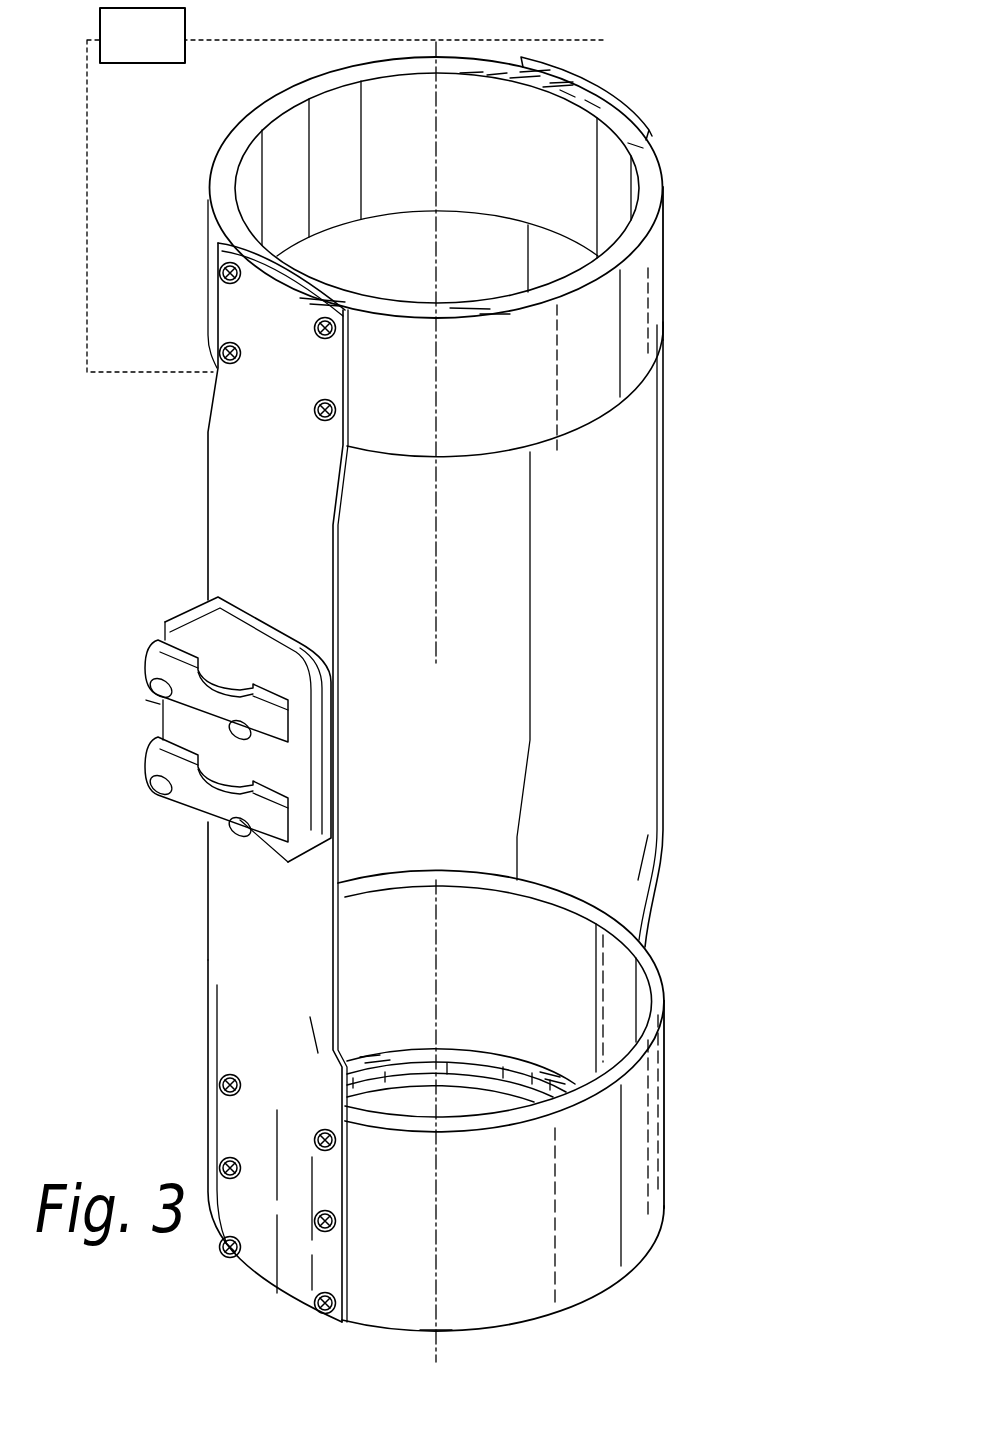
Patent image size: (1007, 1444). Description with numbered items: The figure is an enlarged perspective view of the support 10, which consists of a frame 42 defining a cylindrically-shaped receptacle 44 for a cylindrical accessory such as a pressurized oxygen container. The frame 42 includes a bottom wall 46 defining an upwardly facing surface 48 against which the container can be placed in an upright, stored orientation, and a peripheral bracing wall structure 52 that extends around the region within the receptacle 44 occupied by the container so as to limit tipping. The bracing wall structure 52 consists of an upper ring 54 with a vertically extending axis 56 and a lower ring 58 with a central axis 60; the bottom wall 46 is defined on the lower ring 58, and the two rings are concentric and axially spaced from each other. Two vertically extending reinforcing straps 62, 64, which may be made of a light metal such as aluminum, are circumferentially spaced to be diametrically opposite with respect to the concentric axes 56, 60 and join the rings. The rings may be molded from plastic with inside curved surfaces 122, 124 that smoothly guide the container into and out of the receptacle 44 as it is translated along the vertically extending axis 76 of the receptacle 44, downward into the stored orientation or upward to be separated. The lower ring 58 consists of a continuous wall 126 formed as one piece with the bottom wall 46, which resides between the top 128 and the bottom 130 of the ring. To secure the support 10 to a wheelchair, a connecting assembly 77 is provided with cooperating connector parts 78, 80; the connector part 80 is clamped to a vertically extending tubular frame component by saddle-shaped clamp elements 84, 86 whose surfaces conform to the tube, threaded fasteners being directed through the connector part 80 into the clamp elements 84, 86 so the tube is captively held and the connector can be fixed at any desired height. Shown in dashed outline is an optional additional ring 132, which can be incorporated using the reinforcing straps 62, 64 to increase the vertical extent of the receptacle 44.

The support 10 is at (726, 324).
The frame 42 is at (404, 761).
The receptacle 44 is at (375, 288).
The bottom wall 46 is at (514, 1075).
The upwardly facing surface 48 is at (432, 1063).
The peripheral bracing wall structure 52 is at (496, 257).
The upper ring 54 is at (645, 168).
The axis of upper ring 56 is at (440, 125).
The lower ring 58 is at (577, 1060).
The central axis of lower ring 60 is at (440, 1347).
The reinforcing strap 62 is at (243, 494).
The reinforcing strap 64 is at (623, 667).
The vertically extending axis of the receptacle 76 is at (440, 583).
The connecting assembly 77 is at (182, 698).
The connector part 78 is at (261, 620).
The connector part 80 is at (181, 638).
The clamp element 84 is at (138, 652).
The clamp element 86 is at (195, 807).
The inside curved surface 122 is at (577, 167).
The inside curved surface 124 is at (555, 992).
The continuous wall 126 is at (637, 1112).
The top of the ring 128 is at (563, 903).
The bottom of the ring 130 is at (592, 1297).
The additional ring 132 is at (127, 58).